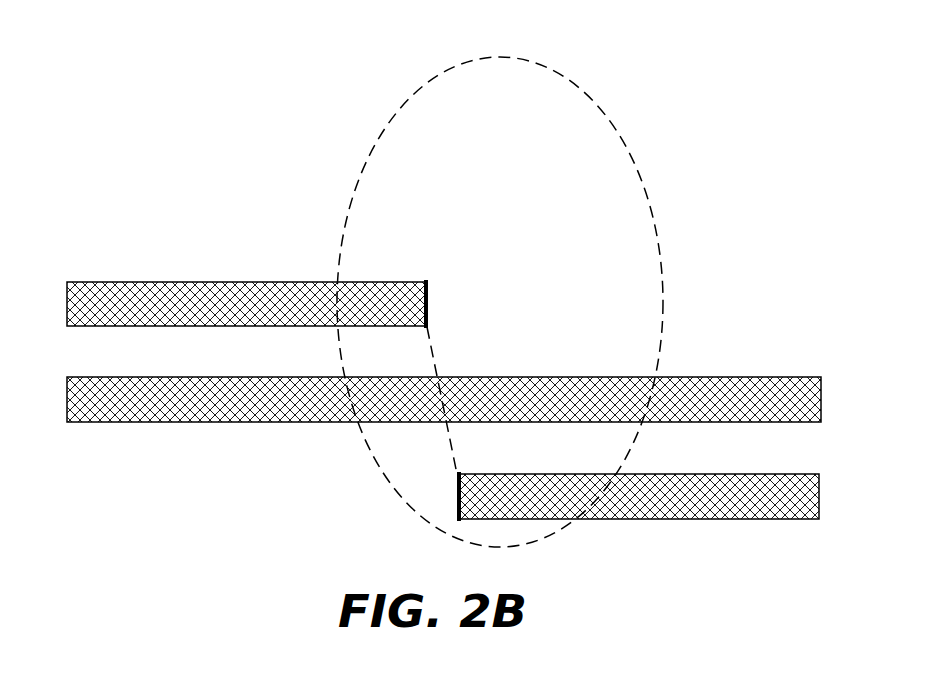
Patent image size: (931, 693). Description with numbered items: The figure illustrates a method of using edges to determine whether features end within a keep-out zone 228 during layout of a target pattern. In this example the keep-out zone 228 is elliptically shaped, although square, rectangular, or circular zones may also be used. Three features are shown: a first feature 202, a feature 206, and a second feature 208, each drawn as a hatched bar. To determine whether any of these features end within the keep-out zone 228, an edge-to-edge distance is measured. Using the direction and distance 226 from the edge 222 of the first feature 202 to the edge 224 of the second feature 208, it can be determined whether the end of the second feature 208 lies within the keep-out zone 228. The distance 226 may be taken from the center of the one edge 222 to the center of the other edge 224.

The first feature 202 is at (214, 282).
The feature 206 is at (790, 377).
The second feature 208 is at (733, 519).
The edge of the first feature 222 is at (430, 290).
The edge of the second feature 224 is at (458, 493).
The direction and distance 226 is at (436, 357).
The keep-out zone 228 is at (659, 238).